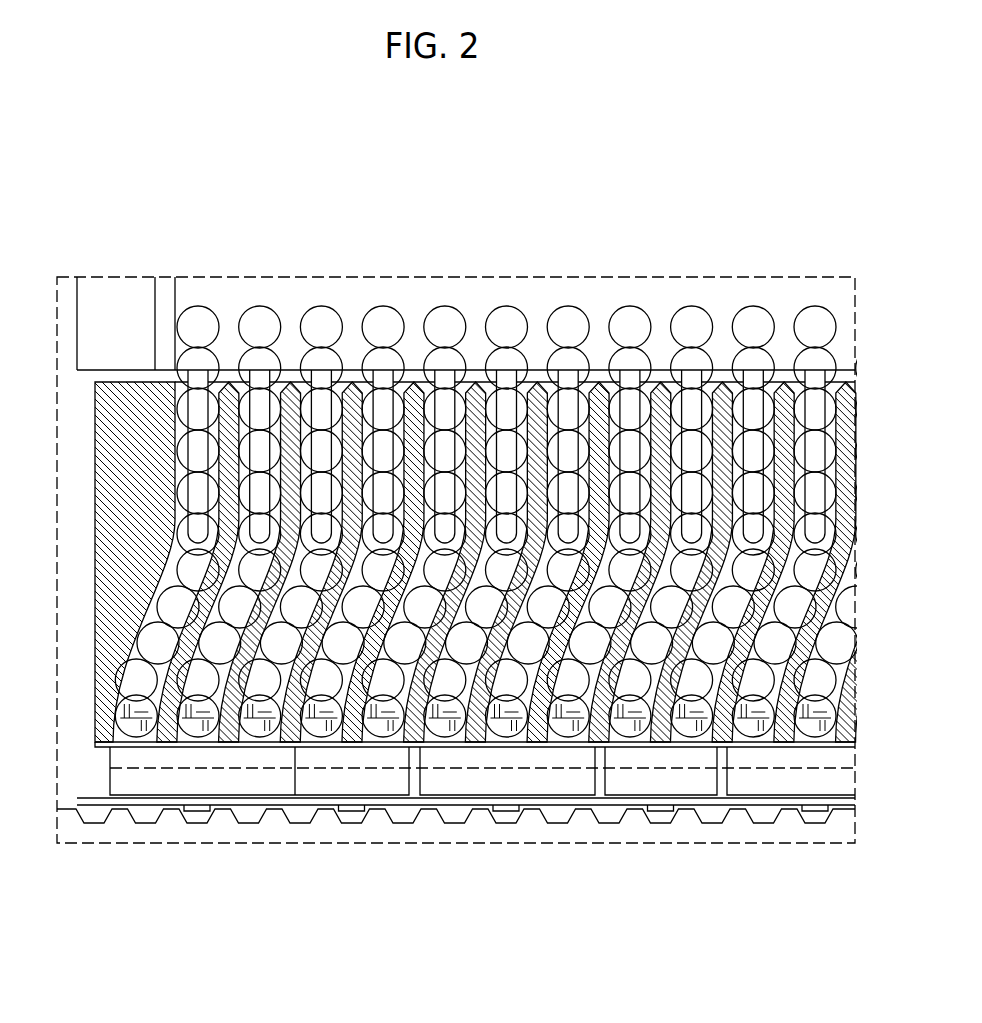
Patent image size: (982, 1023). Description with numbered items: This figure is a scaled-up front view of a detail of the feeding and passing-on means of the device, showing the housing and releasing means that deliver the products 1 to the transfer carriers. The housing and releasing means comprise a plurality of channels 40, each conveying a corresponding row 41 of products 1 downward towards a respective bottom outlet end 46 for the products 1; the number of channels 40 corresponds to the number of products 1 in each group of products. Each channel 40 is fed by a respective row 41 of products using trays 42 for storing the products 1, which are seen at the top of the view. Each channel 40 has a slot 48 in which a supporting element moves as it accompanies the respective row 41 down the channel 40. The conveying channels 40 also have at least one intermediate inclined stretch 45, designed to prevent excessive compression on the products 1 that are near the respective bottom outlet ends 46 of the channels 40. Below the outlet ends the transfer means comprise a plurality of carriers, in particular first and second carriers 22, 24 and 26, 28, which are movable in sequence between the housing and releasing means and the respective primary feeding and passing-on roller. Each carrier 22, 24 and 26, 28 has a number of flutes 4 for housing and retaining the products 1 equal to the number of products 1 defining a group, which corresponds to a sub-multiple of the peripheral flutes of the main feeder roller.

The products 1 is at (813, 733).
The flutes 4 is at (722, 735).
The first carrier 22 is at (224, 790).
The second carrier 24 is at (466, 894).
The first carrier 26 is at (456, 900).
The second carrier 28 is at (506, 898).
The channels 40 is at (152, 737).
The rows 41 is at (507, 307).
The trays 42 is at (77, 328).
The intermediate inclined stretch 45 is at (560, 665).
The bottom outlet end 46 is at (752, 743).
The slot 48 is at (745, 412).